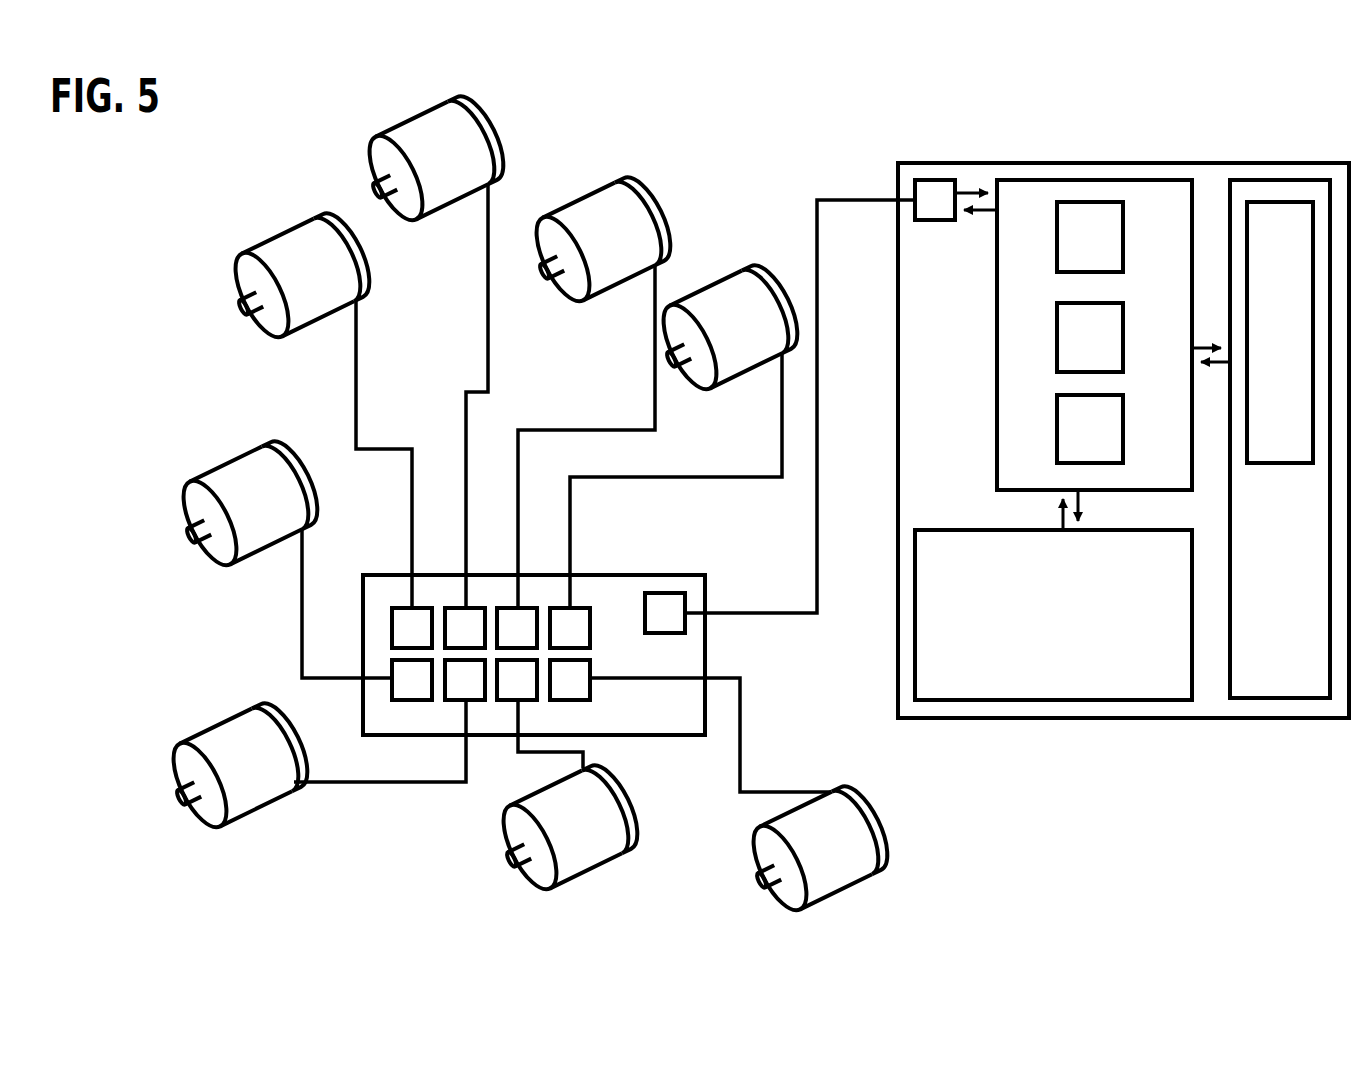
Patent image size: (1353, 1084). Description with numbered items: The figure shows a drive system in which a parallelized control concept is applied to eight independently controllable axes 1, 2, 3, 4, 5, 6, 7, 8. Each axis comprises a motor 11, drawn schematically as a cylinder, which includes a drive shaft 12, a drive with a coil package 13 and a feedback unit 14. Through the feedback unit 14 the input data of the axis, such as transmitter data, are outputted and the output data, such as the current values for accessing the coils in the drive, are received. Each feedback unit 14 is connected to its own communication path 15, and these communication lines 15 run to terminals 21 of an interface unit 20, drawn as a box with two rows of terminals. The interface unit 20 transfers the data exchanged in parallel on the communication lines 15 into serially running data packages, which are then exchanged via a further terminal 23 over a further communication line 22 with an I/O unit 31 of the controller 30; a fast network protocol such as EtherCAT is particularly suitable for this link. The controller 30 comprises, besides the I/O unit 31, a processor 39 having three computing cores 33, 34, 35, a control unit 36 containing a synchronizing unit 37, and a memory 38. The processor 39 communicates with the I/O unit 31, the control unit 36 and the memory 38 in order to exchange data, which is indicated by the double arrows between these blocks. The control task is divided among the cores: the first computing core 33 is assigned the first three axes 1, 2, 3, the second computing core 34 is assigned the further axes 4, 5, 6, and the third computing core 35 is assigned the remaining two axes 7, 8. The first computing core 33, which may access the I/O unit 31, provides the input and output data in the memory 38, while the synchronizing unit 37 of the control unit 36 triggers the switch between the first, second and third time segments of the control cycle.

The axis 1 is at (272, 250).
The axis 2 is at (420, 123).
The axis 3 is at (575, 202).
The axis 4 is at (726, 290).
The axis 5 is at (223, 475).
The axis 6 is at (227, 735).
The axis 7 is at (545, 802).
The axis 8 is at (827, 873).
The motor 11 is at (224, 280).
The drive shaft 12 is at (240, 312).
The coil package 13 is at (297, 281).
The feedback unit 14 is at (332, 228).
The communication path 15 is at (378, 392).
The interface unit 20 is at (634, 718).
The terminal 21 is at (399, 641).
The further communication line 22 is at (828, 195).
The further terminal 23 is at (652, 626).
The controller 30 is at (920, 293).
The I/O unit 31 is at (922, 213).
The first computing core 33 is at (1075, 250).
The second computing core 34 is at (1075, 350).
The third computing core 35 is at (1075, 443).
The control unit 36 is at (1267, 590).
The synchronizing unit 37 is at (1267, 345).
The memory 38 is at (1040, 630).
The processor 39 is at (1010, 293).